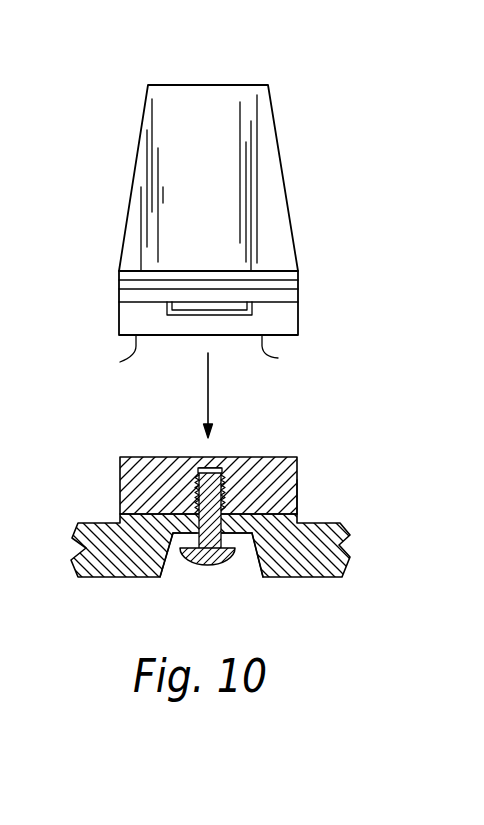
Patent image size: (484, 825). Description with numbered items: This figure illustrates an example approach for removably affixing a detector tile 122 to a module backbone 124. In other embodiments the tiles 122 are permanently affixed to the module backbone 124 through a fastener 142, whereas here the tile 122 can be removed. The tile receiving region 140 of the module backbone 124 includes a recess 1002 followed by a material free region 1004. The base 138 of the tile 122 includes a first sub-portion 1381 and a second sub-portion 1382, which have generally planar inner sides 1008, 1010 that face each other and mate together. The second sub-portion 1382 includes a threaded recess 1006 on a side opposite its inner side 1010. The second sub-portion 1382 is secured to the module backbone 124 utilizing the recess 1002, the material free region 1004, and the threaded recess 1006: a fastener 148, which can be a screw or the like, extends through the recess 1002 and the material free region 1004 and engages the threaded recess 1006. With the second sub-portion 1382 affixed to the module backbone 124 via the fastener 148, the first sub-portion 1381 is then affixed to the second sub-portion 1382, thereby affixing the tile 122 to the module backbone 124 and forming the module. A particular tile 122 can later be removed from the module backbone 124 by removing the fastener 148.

The tile 122 is at (138, 62).
The base 138 is at (252, 288).
The first sub-portion 1381 is at (298, 312).
The second sub-portion 1382 is at (297, 492).
The fastener 142 is at (120, 362).
The inner side 1008 is at (278, 358).
The inner side 1010 is at (263, 457).
The threaded recess 1006 is at (175, 478).
The material free region 1004 is at (185, 530).
The module backbone 124 is at (115, 548).
The recess 1002 is at (180, 567).
The fastener 148 is at (215, 562).
The tile receiving region 140 is at (206, 521).